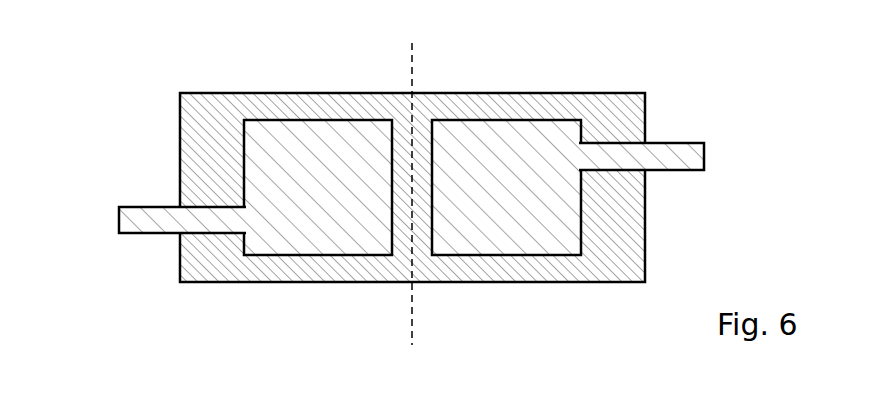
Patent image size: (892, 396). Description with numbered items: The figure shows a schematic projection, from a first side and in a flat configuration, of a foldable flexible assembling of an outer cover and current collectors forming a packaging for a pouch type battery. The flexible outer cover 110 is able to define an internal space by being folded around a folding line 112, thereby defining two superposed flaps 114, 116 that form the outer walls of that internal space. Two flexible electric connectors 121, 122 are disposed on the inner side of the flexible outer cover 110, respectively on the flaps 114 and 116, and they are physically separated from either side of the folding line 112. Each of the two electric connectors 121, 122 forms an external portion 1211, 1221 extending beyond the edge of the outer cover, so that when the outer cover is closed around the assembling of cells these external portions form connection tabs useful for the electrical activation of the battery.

The flexible outer cover 110 is at (435, 149).
The folding line 112 is at (413, 75).
The flap 114 is at (222, 100).
The flap 116 is at (545, 100).
The flexible electric connector 121 is at (315, 247).
The flexible electric connector 122 is at (510, 247).
The external portion 1211 is at (152, 217).
The external portion 1221 is at (680, 157).